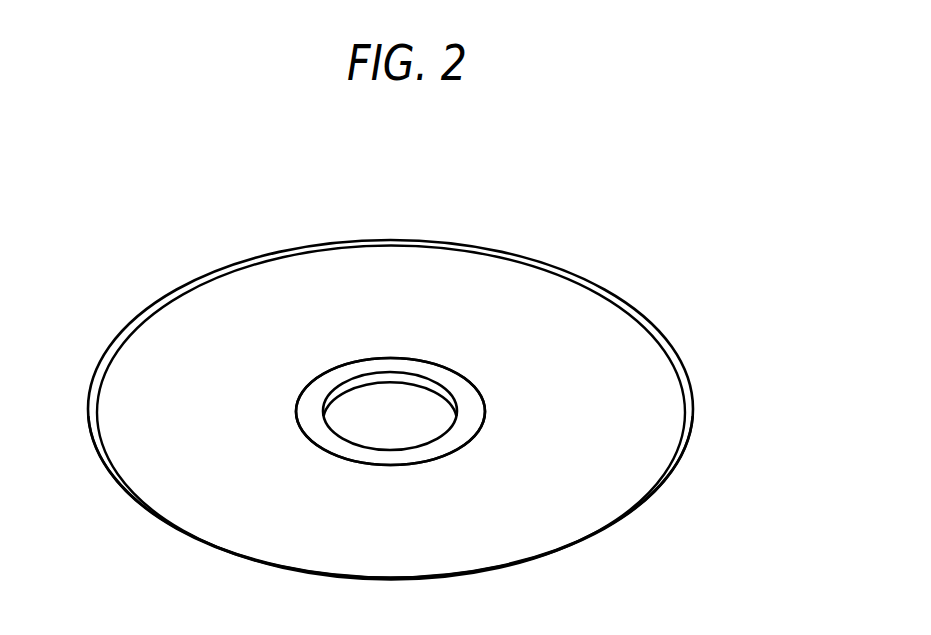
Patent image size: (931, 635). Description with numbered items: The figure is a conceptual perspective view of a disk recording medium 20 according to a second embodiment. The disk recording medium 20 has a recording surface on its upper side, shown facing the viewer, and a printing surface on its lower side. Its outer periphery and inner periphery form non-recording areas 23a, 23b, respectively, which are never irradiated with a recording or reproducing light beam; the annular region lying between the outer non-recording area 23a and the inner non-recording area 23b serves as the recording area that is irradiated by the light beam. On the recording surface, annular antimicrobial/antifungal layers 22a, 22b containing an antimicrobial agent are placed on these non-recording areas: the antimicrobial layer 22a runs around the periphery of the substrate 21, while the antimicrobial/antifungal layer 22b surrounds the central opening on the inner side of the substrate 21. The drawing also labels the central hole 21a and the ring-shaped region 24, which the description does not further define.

The disk recording medium 20 is at (582, 214).
The substrate 21 is at (668, 484).
The center hole 21a is at (369, 404).
The antimicrobial/antifungal layer 22a is at (690, 418).
The antimicrobial/antifungal layer 22b is at (463, 432).
The non-recording area 23a is at (676, 325).
The non-recording area 23b is at (422, 348).
The recording area 24 is at (560, 331).